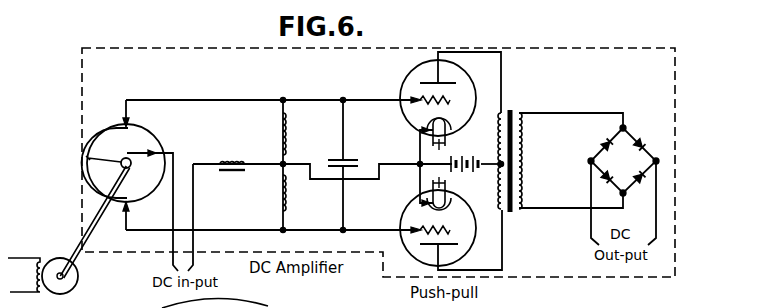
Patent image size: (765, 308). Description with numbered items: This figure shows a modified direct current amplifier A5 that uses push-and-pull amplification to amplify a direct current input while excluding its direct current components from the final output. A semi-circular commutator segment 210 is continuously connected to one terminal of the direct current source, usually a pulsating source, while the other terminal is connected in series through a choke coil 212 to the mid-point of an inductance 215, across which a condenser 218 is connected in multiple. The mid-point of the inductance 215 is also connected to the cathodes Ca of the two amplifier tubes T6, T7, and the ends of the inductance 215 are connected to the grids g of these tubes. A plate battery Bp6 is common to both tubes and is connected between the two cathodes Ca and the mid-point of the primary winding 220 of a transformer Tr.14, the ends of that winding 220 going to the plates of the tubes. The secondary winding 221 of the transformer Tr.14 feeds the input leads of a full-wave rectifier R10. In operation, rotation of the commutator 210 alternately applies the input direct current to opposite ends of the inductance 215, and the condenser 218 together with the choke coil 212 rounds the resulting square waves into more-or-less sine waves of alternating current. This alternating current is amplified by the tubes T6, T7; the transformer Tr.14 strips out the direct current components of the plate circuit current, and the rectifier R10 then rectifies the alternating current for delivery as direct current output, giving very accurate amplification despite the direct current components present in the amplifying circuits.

The DC amplifier assembly A5 is at (81, 102).
The semi-circular commutator segment 210 is at (110, 131).
The choke coil 212 is at (231, 161).
The inductance 215 is at (291, 177).
The condenser 218 is at (352, 165).
The amplifier tube T6 is at (459, 80).
The amplifier tube T7 is at (464, 252).
The grid g is at (450, 100).
The cathode Ca is at (427, 130).
The primary winding 220 is at (479, 175).
The plate battery Bp6 is at (475, 189).
The transformer Tr.14 is at (517, 107).
The secondary winding 221 is at (571, 161).
The full-wave rectifier R10 is at (626, 148).